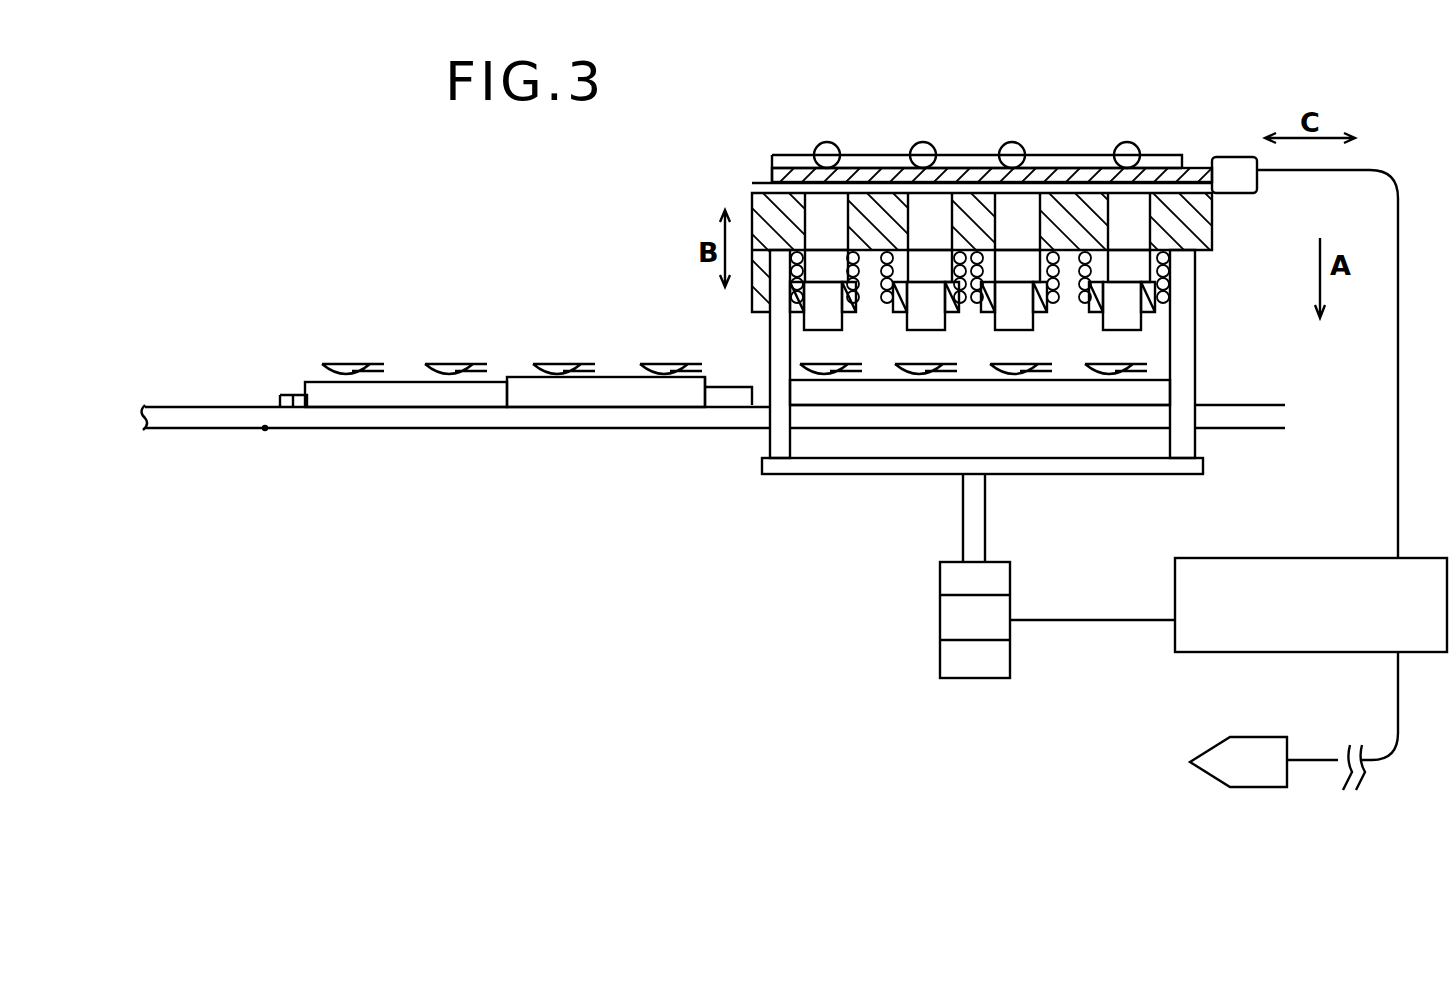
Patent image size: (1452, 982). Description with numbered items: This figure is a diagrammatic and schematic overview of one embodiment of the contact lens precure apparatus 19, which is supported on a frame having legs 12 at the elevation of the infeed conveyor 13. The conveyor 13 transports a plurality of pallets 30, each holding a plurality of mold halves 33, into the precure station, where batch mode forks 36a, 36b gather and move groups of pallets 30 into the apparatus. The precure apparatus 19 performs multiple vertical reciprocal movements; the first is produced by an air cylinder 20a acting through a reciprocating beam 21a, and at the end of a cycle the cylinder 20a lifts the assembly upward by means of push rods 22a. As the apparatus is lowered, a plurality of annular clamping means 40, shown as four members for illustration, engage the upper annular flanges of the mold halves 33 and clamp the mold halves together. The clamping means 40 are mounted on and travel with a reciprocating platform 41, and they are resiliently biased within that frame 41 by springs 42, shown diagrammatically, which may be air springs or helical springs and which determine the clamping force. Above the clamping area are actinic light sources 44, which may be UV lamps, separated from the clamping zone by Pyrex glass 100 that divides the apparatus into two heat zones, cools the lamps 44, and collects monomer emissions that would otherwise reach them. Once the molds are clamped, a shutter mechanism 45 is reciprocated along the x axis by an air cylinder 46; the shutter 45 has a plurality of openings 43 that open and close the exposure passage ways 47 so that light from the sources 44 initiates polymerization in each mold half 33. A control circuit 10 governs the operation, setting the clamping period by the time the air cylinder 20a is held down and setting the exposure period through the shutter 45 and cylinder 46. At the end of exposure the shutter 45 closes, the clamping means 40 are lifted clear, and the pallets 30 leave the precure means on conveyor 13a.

The control circuit 10 is at (1311, 605).
The legs 12 is at (1238, 762).
The infeed conveyor 13 is at (165, 430).
The conveyor 13a is at (1222, 430).
The precure apparatus 19 is at (1048, 72).
The air cylinder 20a is at (1000, 560).
The reciprocating beam 21a is at (890, 476).
The push rods 22a is at (770, 331).
The pallets 30 is at (368, 393).
The mold halves 33 is at (455, 362).
The batch mode fork 36a is at (293, 395).
The batch mode fork 36b is at (728, 405).
The annular clamping means 40 is at (1170, 300).
The reciprocating platform 41 is at (1195, 212).
The springs 42 is at (1170, 265).
The openings 43 is at (790, 172).
The actinic light sources 44 is at (822, 143).
The shutter mechanism 45 is at (1185, 167).
The air cylinder 46 is at (1230, 156).
The exposure passage ways 47 is at (840, 237).
The Pyrex glass 100 is at (875, 154).